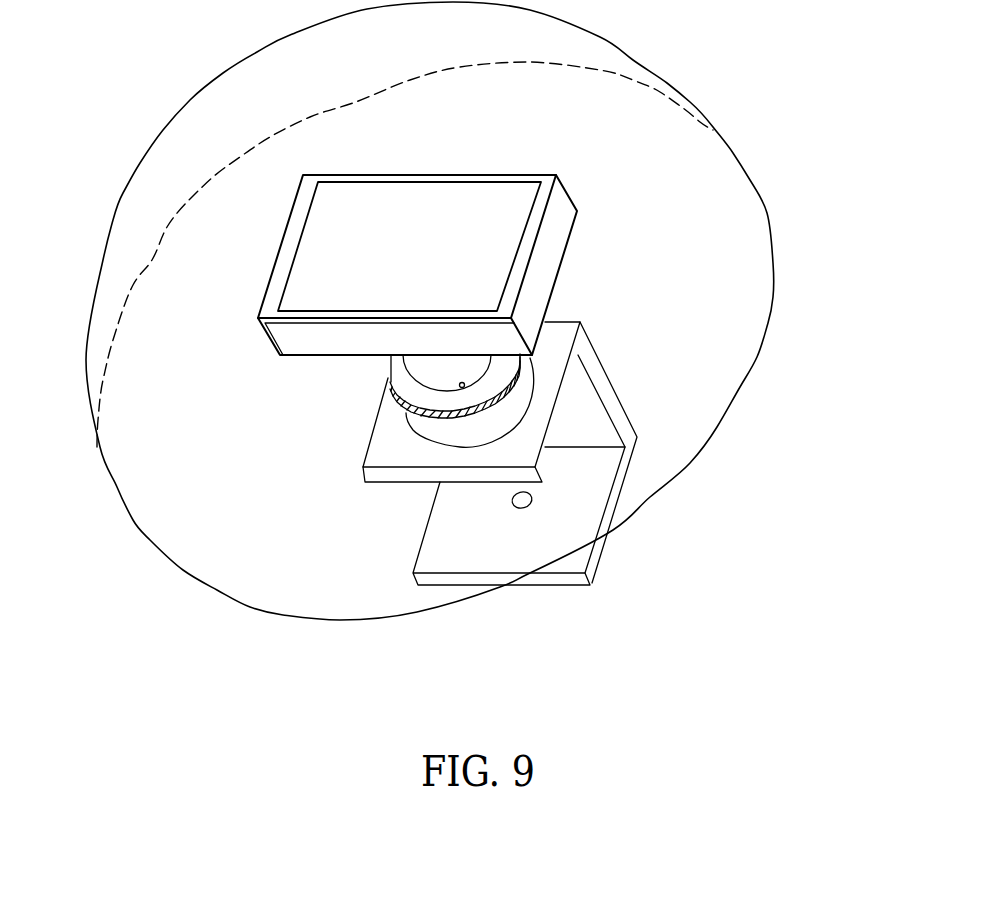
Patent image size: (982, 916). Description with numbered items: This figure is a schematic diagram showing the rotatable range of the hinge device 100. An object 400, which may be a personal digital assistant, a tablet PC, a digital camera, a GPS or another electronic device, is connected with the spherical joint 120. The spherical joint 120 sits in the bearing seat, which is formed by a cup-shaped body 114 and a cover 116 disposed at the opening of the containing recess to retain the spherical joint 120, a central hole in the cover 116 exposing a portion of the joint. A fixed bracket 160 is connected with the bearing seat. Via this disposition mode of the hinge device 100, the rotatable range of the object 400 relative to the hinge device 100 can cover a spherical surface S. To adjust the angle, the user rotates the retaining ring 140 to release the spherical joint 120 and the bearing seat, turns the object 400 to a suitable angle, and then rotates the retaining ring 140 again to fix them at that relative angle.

The spherical surface S is at (185, 182).
The hinge device 100 is at (688, 512).
The cup-shaped body 114 is at (520, 380).
The cover 116 is at (493, 363).
The spherical joint 120 is at (433, 371).
The retaining ring 140 is at (406, 440).
The fixed bracket 160 is at (613, 402).
The object 400 is at (458, 215).